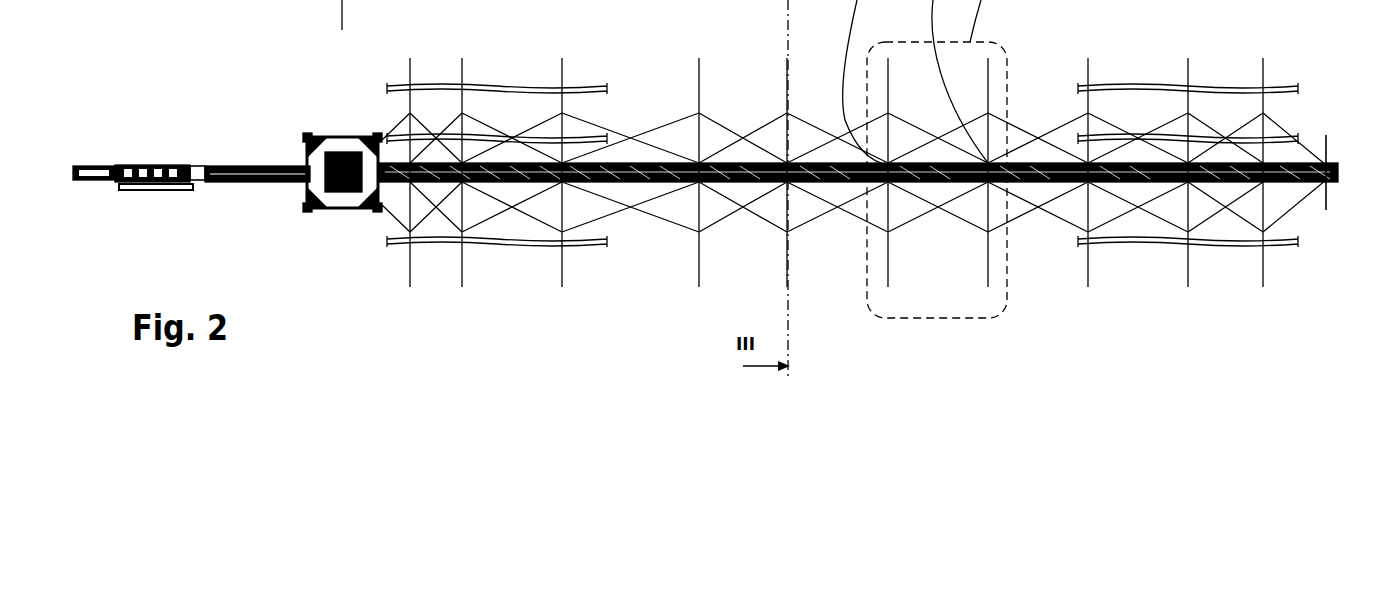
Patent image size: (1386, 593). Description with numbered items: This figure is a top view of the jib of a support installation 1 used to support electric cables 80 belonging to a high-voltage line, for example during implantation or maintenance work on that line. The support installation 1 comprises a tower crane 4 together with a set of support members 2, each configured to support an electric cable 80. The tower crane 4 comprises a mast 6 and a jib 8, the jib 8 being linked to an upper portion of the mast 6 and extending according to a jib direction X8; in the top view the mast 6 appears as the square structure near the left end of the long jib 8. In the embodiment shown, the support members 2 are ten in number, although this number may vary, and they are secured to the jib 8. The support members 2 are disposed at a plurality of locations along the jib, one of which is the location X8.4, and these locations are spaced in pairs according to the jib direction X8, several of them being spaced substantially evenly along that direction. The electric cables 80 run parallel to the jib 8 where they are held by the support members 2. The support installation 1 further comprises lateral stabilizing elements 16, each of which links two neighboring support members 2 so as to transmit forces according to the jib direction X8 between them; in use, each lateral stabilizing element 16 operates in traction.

The support installation 1 is at (285, 270).
The support members 2 is at (562, 68).
The tower crane 4 is at (260, 113).
The mast 6 is at (345, 135).
The jib 8 is at (630, 183).
The lateral stabilizing elements 16 is at (820, 222).
The electric cables 80 is at (440, 86).
The jib direction X8 is at (1385, 172).
The location X8.4 is at (1047, 162).